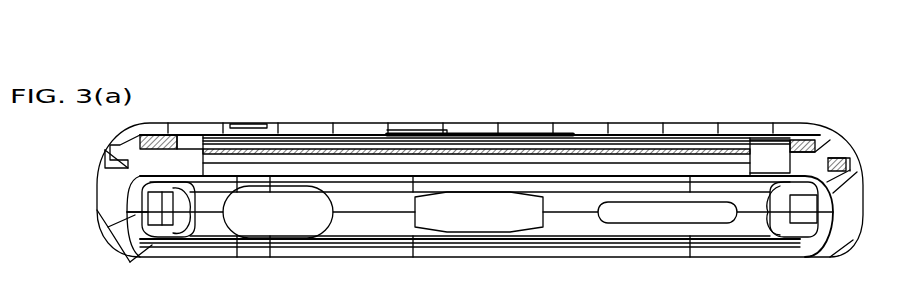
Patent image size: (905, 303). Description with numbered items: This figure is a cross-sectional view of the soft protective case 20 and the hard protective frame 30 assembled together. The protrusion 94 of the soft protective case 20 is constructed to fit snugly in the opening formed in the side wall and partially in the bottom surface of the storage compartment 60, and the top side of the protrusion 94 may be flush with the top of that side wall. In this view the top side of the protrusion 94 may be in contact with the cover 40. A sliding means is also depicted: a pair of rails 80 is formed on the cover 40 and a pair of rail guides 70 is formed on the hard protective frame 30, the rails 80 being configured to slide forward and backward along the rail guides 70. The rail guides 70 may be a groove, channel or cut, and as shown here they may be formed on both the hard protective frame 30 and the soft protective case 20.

The soft protective case 20 is at (115, 205).
The hard protective frame 30 is at (298, 168).
The cover 40 is at (405, 130).
The storage compartment 60 is at (503, 158).
The rail guides 70 is at (812, 150).
The rails 80 is at (820, 152).
The protrusion 94 is at (197, 153).